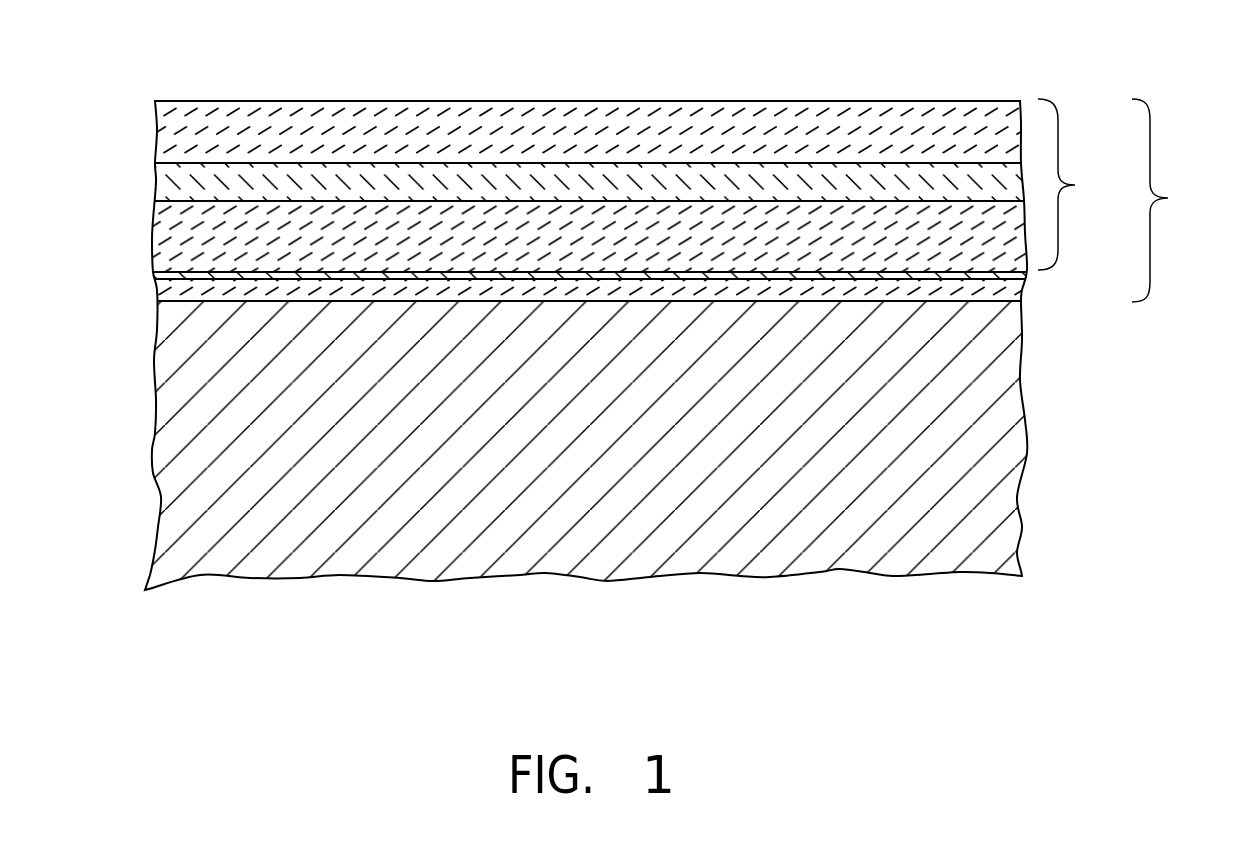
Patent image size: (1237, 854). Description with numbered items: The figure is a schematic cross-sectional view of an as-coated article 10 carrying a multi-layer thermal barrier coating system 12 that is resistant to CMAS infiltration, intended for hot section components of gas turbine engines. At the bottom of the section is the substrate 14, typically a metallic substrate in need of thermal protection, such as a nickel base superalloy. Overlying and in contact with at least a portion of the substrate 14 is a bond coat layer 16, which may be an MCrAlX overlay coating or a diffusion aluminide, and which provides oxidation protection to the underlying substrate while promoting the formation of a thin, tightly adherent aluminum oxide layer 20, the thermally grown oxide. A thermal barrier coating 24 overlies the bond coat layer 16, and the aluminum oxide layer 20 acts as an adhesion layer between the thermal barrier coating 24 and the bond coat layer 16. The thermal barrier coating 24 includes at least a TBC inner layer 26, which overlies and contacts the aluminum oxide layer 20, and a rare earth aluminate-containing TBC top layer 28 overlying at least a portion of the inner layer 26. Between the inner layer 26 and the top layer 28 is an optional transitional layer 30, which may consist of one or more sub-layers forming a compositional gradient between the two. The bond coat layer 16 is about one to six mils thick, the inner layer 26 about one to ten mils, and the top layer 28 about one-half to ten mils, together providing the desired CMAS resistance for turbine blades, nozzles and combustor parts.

The coated article 10 is at (358, 633).
The thermal barrier coating system 12 is at (1168, 198).
The substrate 14 is at (184, 465).
The bond coat layer 16 is at (160, 288).
The aluminum oxide layer 20 is at (160, 275).
The thermal barrier coating 24 is at (1075, 185).
The TBC inner layer 26 is at (163, 230).
The TBC top layer 28 is at (558, 110).
The transitional layer 30 is at (163, 180).